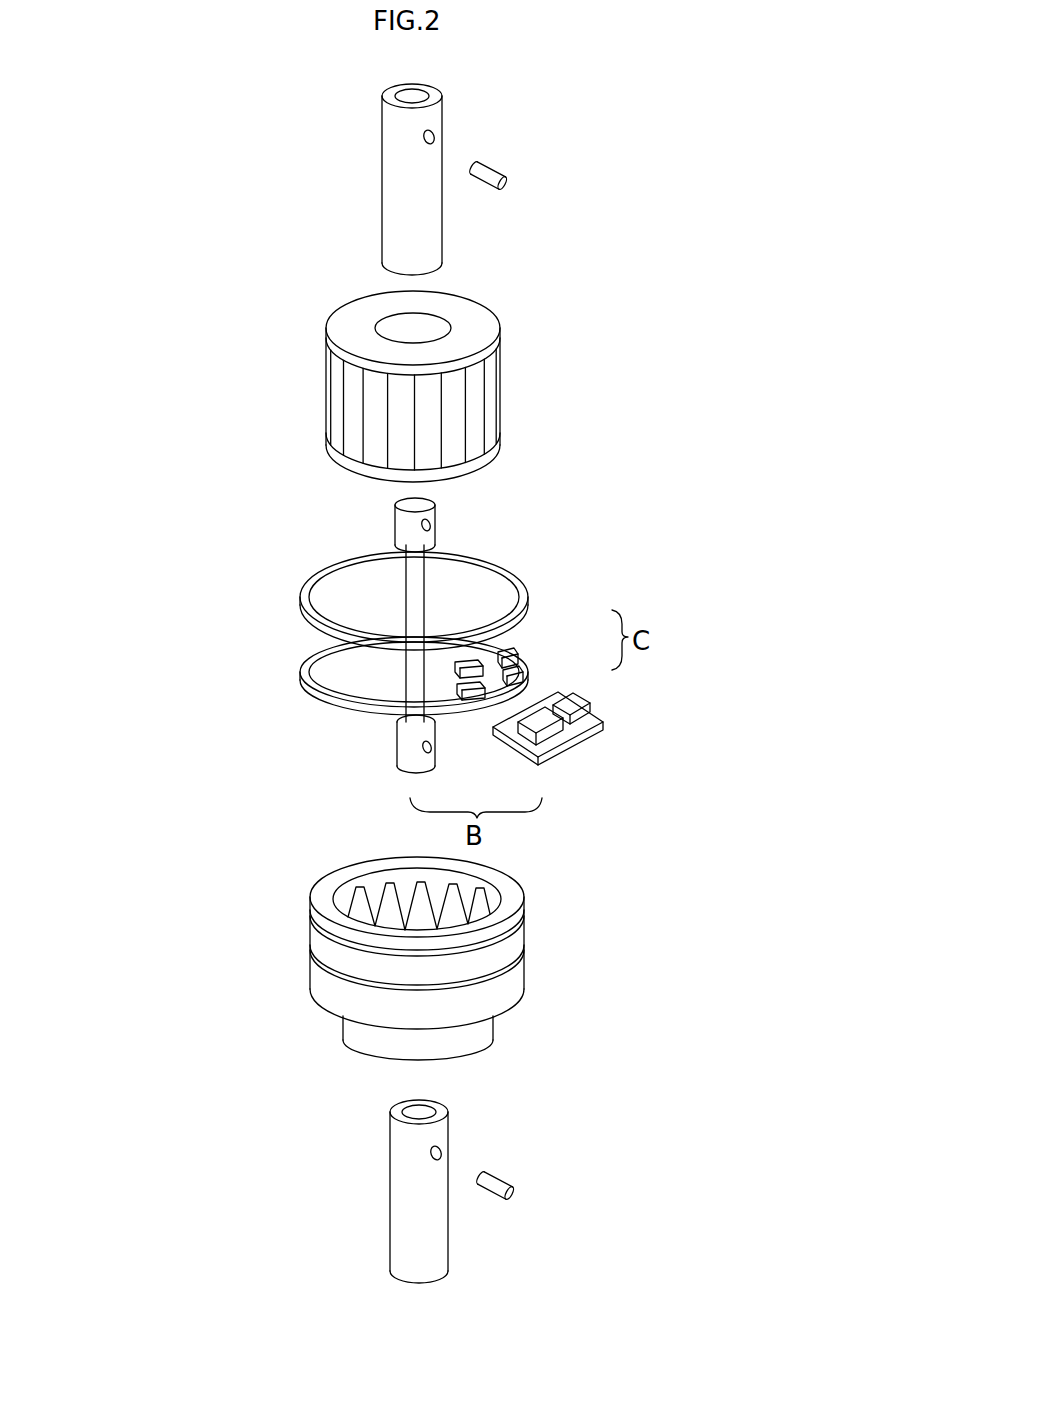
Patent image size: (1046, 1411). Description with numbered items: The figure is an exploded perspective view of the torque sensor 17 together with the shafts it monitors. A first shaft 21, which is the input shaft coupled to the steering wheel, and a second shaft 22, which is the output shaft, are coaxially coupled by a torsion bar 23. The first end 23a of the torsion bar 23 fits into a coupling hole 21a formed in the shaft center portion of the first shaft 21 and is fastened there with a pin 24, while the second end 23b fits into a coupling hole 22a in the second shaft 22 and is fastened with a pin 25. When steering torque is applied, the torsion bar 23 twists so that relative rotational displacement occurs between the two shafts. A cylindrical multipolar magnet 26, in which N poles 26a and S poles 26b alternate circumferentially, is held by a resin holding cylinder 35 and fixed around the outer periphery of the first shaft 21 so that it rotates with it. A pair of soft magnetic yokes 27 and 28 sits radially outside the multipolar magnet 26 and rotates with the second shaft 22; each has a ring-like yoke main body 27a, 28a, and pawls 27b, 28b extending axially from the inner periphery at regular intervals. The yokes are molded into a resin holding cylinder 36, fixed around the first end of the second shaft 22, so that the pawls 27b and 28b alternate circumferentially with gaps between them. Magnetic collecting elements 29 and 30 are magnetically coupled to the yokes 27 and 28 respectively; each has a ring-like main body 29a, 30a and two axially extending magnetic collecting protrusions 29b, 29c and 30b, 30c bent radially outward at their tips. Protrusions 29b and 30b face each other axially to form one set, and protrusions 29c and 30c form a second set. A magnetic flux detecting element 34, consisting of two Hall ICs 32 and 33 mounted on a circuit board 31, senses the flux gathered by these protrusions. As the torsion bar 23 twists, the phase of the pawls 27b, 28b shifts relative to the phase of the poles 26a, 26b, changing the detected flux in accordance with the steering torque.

The torque sensor 17 is at (414, 382).
The first shaft 21 is at (388, 168).
The coupling hole 21a is at (512, 89).
The second shaft 22 is at (397, 1184).
The coupling hole 22a is at (512, 1103).
The torsion bar 23 is at (405, 598).
The first end 23a is at (398, 525).
The second end 23b is at (400, 750).
The pin 24 is at (488, 170).
The pin 25 is at (495, 1180).
The multipolar magnet 26 is at (414, 398).
The N poles 26a is at (400, 380).
The S poles 26b is at (428, 440).
The magnetic yoke 27 is at (462, 913).
The yoke main body 27a is at (515, 892).
The pawls 27b is at (462, 882).
The magnetic yoke 28 is at (356, 969).
The yoke main body 28a is at (345, 995).
The pawls 28b is at (368, 905).
The magnetic collecting element 29 is at (410, 656).
The magnetic collecting element main body 29a is at (303, 608).
The magnetic collecting protrusion 29b is at (460, 680).
The magnetic collecting protrusion 29c is at (515, 652).
The magnetic collecting element 30 is at (410, 665).
The magnetic collecting element main body 30a is at (303, 667).
The magnetic collecting protrusion 30b is at (466, 702).
The magnetic collecting protrusion 30c is at (520, 672).
The circuit board 31 is at (570, 728).
The Hall IC 32 is at (552, 740).
The Hall IC 33 is at (578, 704).
The magnetic flux detecting element 34 is at (590, 736).
The holding cylinder 35 is at (345, 323).
The holding cylinder 36 is at (520, 972).